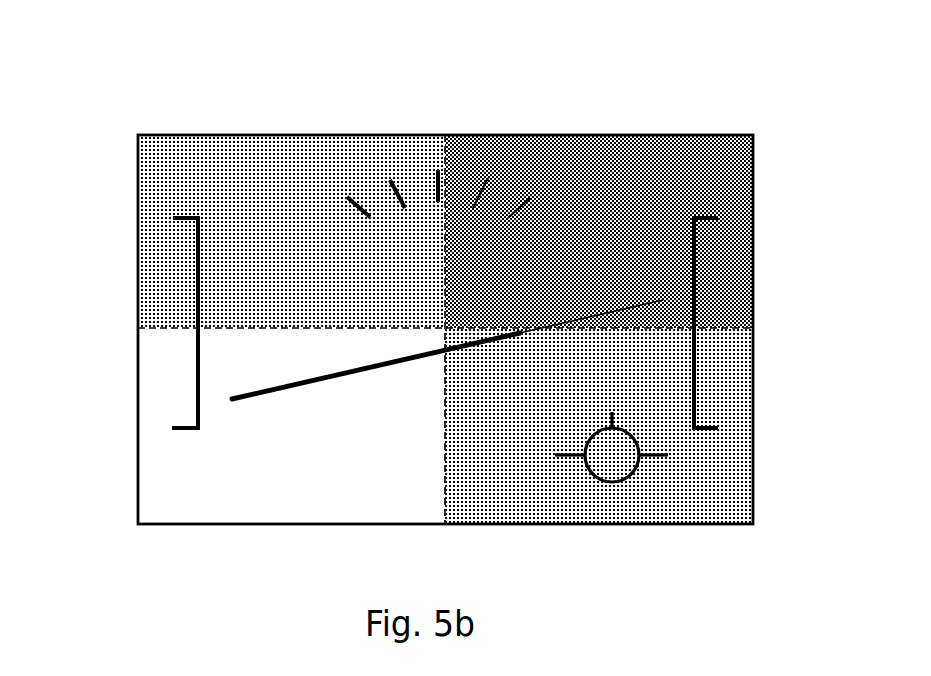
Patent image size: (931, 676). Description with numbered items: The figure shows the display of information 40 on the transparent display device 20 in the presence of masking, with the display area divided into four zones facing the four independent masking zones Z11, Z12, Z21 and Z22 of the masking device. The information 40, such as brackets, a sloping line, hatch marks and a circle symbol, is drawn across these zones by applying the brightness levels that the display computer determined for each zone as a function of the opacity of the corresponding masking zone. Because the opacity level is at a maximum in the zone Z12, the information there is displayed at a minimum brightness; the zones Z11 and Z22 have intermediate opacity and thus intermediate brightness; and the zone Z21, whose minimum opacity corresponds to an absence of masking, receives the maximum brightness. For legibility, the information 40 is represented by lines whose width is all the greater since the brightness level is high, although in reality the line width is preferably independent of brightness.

The transparent display device 20 is at (672, 85).
The information 40 is at (290, 362).
The masking zone Z11 is at (181, 154).
The masking zone Z12 is at (578, 154).
The masking zone Z21 is at (156, 363).
The masking zone Z22 is at (734, 367).